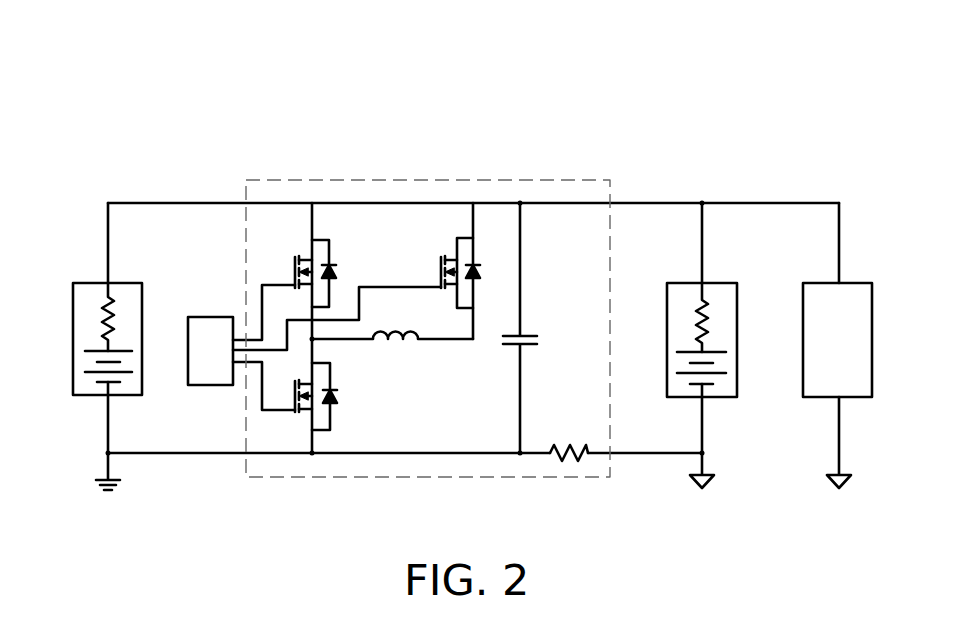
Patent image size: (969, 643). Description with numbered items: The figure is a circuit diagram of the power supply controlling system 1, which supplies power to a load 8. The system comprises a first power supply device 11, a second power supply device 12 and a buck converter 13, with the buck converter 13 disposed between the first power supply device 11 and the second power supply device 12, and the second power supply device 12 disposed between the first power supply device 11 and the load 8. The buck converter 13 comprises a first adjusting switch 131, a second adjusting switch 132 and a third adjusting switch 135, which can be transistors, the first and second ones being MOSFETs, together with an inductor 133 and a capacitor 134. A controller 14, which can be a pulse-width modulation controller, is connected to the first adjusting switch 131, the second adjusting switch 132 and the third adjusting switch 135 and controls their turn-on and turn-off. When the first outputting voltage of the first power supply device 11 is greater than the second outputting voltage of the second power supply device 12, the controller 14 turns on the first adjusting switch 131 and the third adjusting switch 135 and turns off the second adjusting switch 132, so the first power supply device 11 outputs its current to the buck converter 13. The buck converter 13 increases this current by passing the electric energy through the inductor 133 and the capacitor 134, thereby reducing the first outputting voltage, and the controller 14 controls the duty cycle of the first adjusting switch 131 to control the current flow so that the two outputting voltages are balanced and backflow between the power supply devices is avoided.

The power supply controlling system 1 is at (474, 70).
The load 8 is at (818, 283).
The first power supply device 11 is at (126, 283).
The second power supply device 12 is at (719, 283).
The buck converter 13 is at (412, 180).
The controller 14 is at (213, 317).
The first adjusting switch 131 is at (342, 252).
The second adjusting switch 132 is at (344, 396).
The inductor 133 is at (421, 350).
The capacitor 134 is at (538, 322).
The third adjusting switch 135 is at (452, 228).